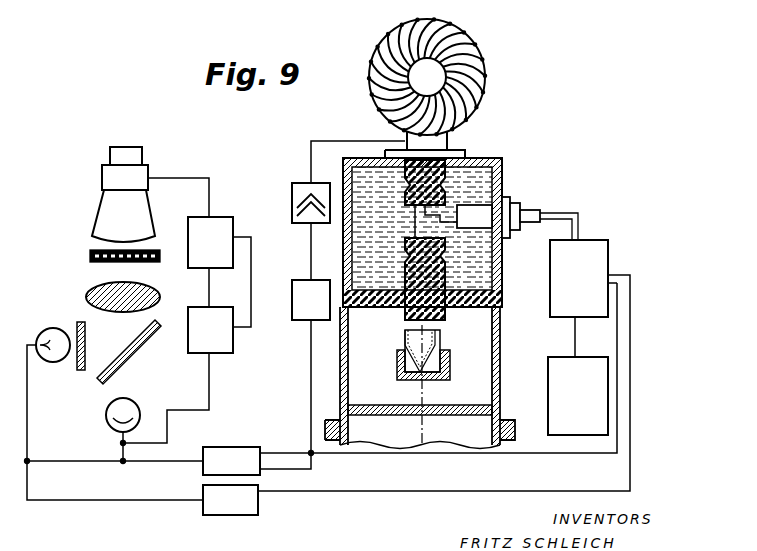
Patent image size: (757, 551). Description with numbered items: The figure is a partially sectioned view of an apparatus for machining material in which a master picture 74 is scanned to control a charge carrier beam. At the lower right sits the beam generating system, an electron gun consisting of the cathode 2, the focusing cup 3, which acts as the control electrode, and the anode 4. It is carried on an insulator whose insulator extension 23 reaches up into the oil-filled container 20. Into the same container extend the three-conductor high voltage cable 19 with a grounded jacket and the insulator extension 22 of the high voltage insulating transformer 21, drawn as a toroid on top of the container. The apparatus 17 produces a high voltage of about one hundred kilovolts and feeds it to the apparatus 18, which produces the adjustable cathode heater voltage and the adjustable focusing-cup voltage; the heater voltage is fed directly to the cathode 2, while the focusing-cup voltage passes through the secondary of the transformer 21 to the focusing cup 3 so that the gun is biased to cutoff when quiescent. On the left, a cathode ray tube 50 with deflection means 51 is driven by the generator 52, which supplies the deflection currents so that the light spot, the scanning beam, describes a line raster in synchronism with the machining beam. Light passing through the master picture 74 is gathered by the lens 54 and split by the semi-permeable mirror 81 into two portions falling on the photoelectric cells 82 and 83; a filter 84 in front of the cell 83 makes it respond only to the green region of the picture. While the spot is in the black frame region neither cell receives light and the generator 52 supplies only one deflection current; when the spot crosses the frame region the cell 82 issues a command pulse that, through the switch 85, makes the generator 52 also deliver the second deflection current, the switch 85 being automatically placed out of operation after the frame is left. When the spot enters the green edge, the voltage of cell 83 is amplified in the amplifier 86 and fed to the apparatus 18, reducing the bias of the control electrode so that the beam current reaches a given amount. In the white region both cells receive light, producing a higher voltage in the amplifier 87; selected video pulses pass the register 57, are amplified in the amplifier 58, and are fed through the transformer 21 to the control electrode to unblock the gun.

The cathode 2 is at (450, 364).
The focusing cup 3 is at (440, 345).
The anode 4 is at (388, 410).
The high voltage apparatus 17 is at (548, 382).
The heater and focusing-cup voltage apparatus 18 is at (600, 252).
The three-conductor high voltage cable 19 is at (522, 213).
The oil-filled container 20 is at (503, 165).
The high voltage insulating transformer 21 is at (478, 62).
The insulator 22 is at (462, 178).
The insulator extension 23 is at (446, 258).
The cathode ray tube 50 is at (100, 206).
The deflection means 51 is at (108, 176).
The generator 52 is at (215, 228).
The lens 54 is at (88, 297).
The register 57 is at (298, 286).
The amplifier 58 is at (296, 192).
The master picture 74 is at (90, 256).
The semi-permeable mirror 81 is at (138, 344).
The photoelectric cell 82 is at (130, 405).
The photoelectric cell 83 is at (50, 336).
The filter 84 is at (85, 345).
The switch 85 is at (226, 343).
The amplifier 86 is at (246, 505).
The amplifier 87 is at (228, 447).